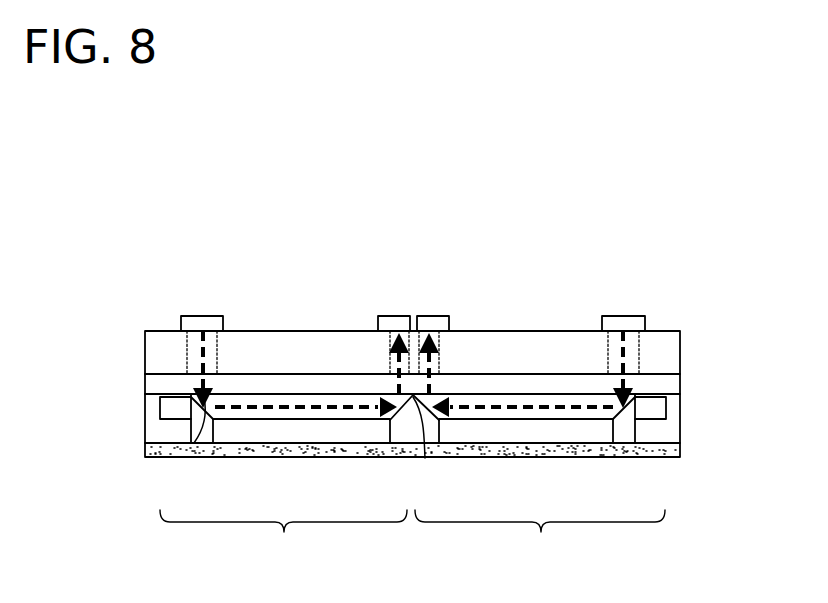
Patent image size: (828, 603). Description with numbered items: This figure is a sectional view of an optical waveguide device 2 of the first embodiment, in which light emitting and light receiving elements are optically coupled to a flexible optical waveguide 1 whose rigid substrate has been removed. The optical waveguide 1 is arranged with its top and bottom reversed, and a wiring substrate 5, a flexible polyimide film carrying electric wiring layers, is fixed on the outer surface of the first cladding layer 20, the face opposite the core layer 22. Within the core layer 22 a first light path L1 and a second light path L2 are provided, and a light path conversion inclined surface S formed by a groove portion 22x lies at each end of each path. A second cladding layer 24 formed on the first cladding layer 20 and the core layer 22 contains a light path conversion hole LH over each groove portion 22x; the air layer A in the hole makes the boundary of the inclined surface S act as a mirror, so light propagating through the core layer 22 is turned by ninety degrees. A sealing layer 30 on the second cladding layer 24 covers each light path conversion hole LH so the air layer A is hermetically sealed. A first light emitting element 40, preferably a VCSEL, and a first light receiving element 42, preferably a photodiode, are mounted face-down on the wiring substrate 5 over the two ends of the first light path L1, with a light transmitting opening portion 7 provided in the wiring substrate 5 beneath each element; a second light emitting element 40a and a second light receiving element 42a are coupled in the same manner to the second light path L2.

The optical waveguide 1 is at (720, 378).
The optical waveguide device 2 is at (396, 178).
The wiring substrate 5 is at (720, 315).
The light transmitting opening portion 7 is at (187, 347).
The first cladding layer 20 is at (245, 383).
The core layer 22 is at (269, 400).
The groove portion 22x is at (160, 406).
The second cladding layer 24 is at (288, 430).
The sealing layer 30 is at (287, 450).
The first light emitting element 40 is at (211, 322).
The second light emitting element 40a is at (623, 321).
The first light receiving element 42 is at (394, 321).
The second light receiving element 42a is at (432, 321).
The air layer A is at (206, 434).
The light path conversion inclined surface S is at (193, 444).
The light path conversion hole LH is at (190, 423).
The first light path L1 is at (283, 539).
The second light path L2 is at (540, 539).